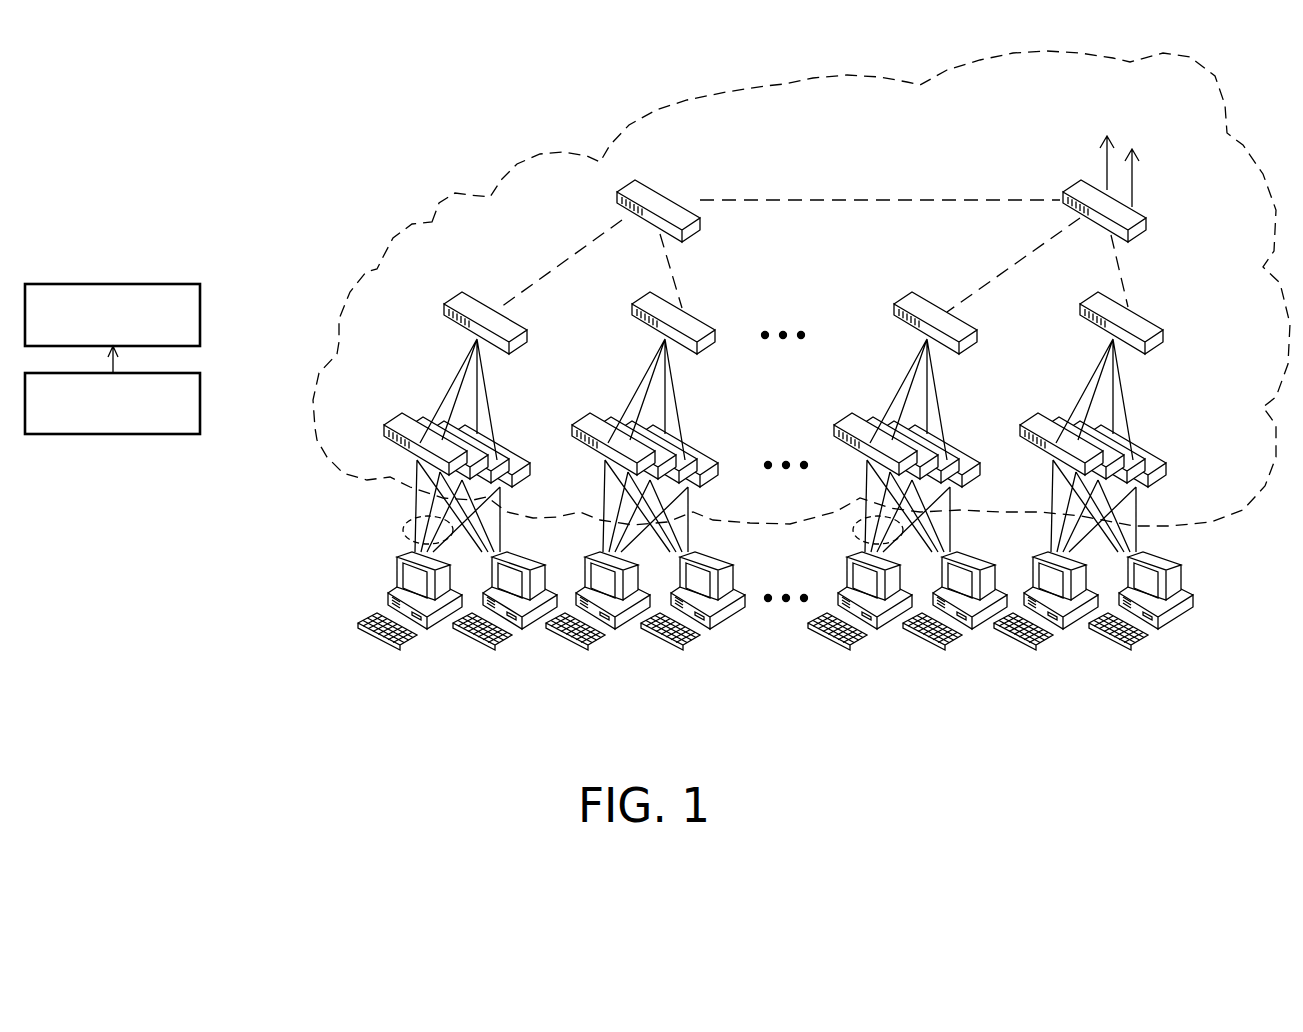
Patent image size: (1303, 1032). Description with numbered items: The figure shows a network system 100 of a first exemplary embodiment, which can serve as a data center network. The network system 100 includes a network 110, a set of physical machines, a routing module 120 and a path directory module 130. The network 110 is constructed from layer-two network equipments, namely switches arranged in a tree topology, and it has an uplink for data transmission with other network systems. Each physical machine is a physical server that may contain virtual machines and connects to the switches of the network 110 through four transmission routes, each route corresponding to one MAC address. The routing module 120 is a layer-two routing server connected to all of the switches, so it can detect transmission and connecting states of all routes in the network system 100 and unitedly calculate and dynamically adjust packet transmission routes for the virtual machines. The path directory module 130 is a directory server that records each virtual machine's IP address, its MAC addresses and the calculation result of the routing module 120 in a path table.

The network system 100 is at (1301, 750).
The network 110 is at (463, 194).
The routing module 120 is at (202, 405).
The path directory module 130 is at (202, 316).